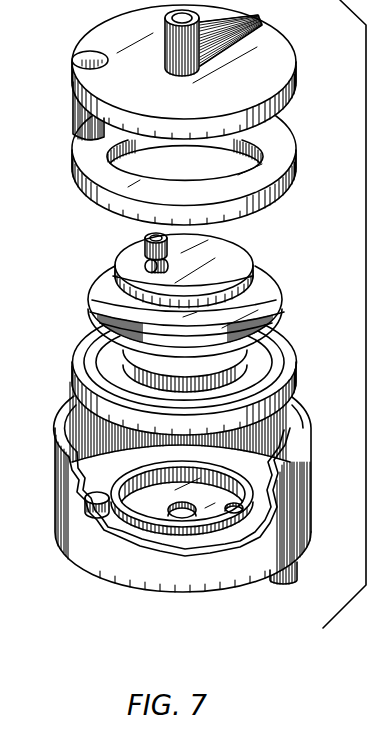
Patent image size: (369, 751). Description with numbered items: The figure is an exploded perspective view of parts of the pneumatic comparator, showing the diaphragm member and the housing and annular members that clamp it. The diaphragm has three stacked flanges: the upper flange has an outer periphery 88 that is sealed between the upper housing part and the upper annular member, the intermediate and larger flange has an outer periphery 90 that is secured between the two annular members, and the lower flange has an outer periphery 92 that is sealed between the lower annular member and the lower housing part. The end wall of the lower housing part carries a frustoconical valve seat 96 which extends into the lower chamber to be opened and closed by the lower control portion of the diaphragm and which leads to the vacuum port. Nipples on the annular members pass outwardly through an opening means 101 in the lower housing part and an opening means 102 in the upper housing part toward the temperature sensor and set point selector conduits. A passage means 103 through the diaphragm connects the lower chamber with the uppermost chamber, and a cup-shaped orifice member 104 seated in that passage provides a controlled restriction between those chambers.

The outer periphery of upper diaphragm flange 88 is at (244, 254).
The outer periphery of intermediate diaphragm flange 90 is at (280, 293).
The outer periphery of lower diaphragm flange 92 is at (272, 352).
The frustoconical valve seat 96 is at (198, 517).
The opening means 101 is at (92, 507).
The opening means 102 is at (75, 62).
The passage means 103 is at (145, 266).
The cup-shaped orifice member 104 is at (145, 242).